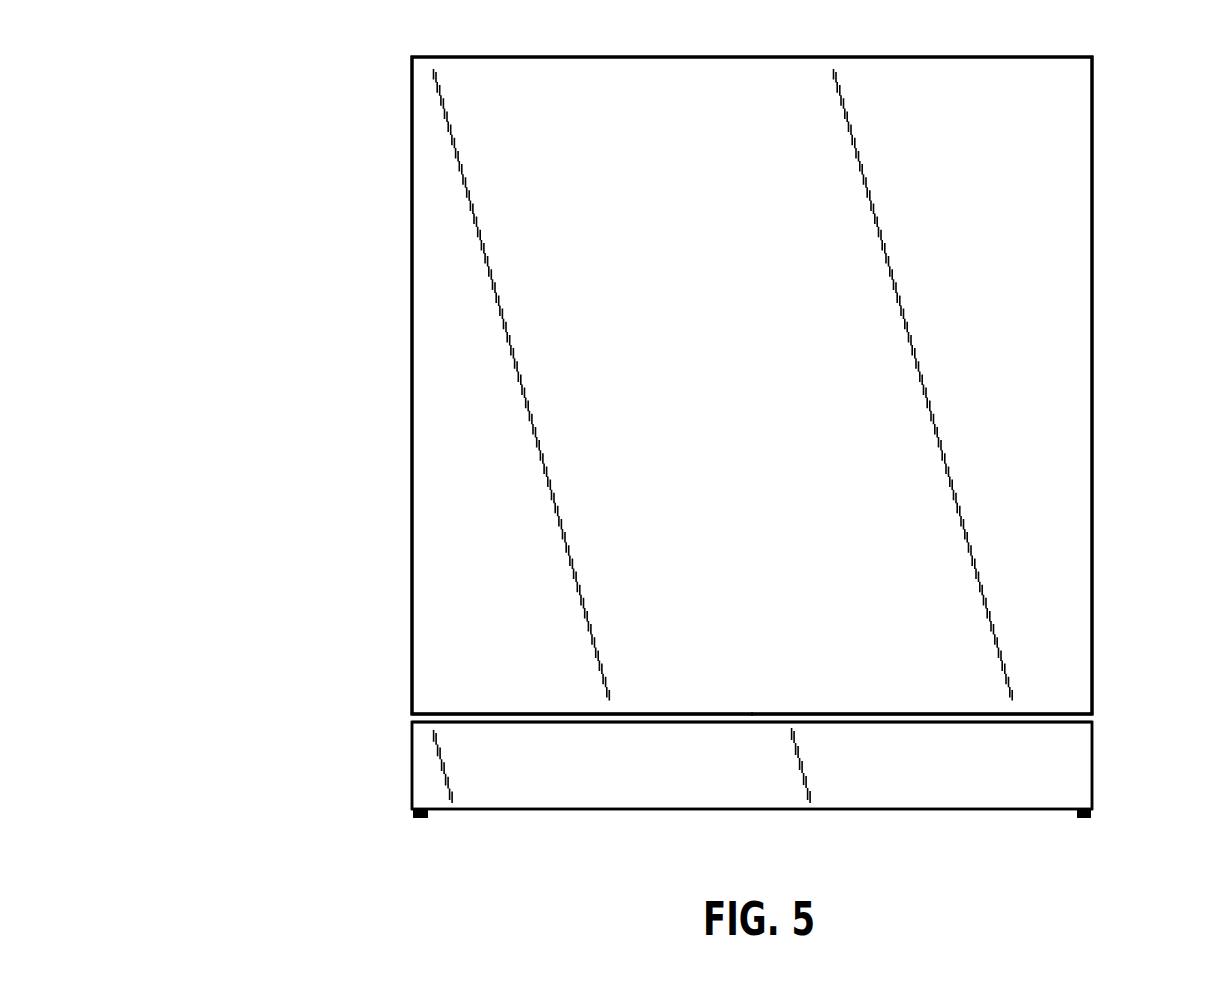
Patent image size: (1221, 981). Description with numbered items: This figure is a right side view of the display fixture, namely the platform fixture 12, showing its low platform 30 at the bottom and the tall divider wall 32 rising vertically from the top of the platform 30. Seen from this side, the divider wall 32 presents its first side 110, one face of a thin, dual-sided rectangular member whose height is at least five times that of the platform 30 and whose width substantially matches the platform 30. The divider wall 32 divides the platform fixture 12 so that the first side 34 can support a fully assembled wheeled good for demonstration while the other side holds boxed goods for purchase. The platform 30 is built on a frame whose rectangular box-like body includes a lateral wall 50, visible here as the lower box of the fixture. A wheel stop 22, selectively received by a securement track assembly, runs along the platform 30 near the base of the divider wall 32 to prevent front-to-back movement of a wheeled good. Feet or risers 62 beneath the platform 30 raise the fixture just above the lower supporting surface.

The platform fixture 12 is at (270, 73).
The first side 110 is at (1050, 193).
The divider wall 32 is at (1058, 342).
The first side 34 is at (1058, 619).
The wheel stop 22 is at (440, 712).
The lateral wall 50 is at (1068, 763).
The platform 30 is at (538, 783).
The feet or risers 62 is at (420, 818).